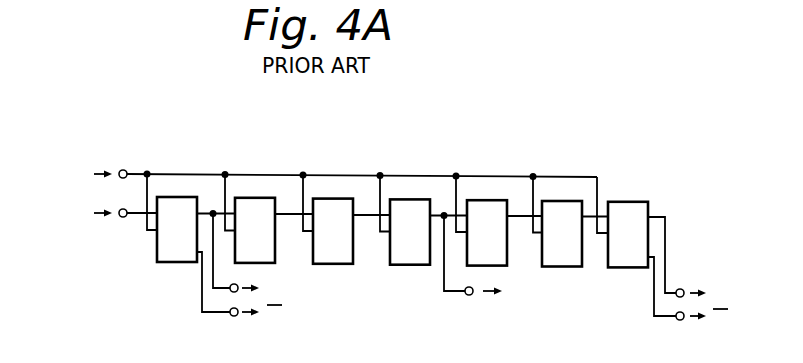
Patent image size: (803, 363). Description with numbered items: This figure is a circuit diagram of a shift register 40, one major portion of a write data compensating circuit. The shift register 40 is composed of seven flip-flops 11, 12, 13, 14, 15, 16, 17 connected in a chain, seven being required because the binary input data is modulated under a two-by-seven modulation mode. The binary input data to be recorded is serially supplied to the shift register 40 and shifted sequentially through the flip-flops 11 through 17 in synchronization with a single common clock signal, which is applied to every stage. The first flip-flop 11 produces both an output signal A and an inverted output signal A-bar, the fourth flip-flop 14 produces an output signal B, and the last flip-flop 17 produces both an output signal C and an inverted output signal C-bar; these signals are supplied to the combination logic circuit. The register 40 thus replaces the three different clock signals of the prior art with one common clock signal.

The shift register 40 is at (309, 134).
The first flip-flop 11 is at (180, 206).
The flip-flop 12 is at (260, 206).
The flip-flop 13 is at (347, 206).
The fourth flip-flop 14 is at (418, 206).
The flip-flop 15 is at (492, 206).
The flip-flop 16 is at (572, 206).
The last flip-flop 17 is at (630, 206).